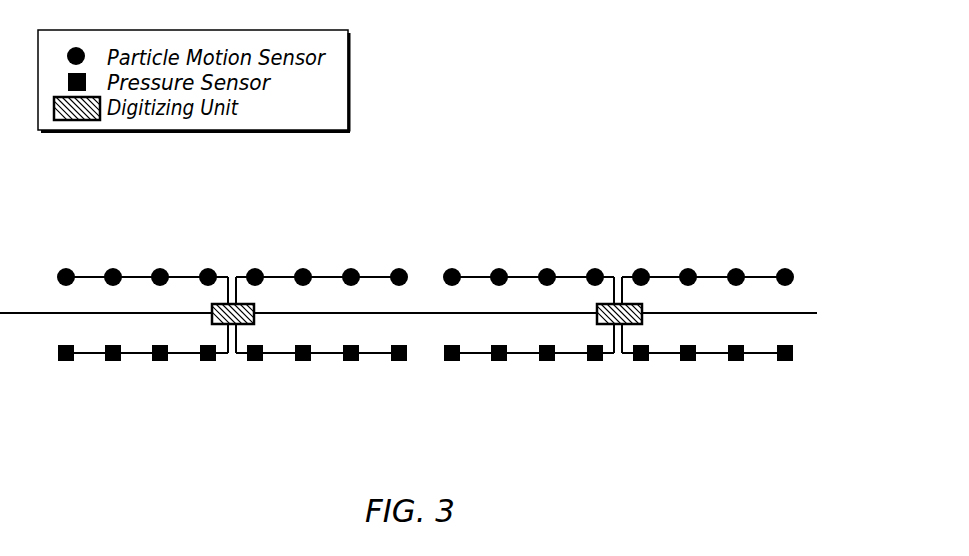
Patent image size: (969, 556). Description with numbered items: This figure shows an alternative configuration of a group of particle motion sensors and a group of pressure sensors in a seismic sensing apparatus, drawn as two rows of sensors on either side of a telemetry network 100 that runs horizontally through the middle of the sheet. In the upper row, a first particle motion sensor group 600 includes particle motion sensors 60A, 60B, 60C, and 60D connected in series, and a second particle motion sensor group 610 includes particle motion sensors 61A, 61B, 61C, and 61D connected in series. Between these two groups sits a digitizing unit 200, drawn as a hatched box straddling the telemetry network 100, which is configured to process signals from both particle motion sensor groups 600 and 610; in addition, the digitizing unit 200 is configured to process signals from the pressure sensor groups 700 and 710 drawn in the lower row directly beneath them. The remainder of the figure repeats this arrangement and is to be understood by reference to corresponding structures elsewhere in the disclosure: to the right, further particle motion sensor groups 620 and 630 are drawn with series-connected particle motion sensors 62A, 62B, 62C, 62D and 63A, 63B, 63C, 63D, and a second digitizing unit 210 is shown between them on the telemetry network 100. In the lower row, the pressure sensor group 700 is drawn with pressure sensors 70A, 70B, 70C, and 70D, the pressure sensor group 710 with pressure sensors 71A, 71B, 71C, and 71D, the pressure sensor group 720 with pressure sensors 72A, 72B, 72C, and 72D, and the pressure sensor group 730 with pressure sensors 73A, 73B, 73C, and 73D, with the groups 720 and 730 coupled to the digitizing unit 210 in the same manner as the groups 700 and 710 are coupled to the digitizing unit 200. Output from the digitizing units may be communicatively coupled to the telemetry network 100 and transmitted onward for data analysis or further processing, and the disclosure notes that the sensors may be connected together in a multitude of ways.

The telemetry network 100 is at (30, 311).
The digitizing unit 200 is at (248, 324).
The digitizing unit 210 is at (635, 324).
The particle motion sensor group 600 is at (131, 211).
The particle motion sensor group 610 is at (316, 209).
The particle motion sensor group 620 is at (504, 209).
The particle motion sensor group 630 is at (715, 209).
The pressure sensor group 700 is at (115, 433).
The pressure sensor group 710 is at (329, 432).
The pressure sensor group 720 is at (541, 432).
The pressure sensor group 730 is at (733, 428).
The particle motion sensor 60A is at (63, 268).
The particle motion sensor 60B is at (110, 268).
The particle motion sensor 60C is at (157, 268).
The particle motion sensor 60D is at (205, 268).
The particle motion sensor 61A is at (252, 268).
The particle motion sensor 61B is at (300, 268).
The particle motion sensor 61C is at (348, 268).
The particle motion sensor 61D is at (396, 268).
The particle motion sensor 62A is at (449, 268).
The particle motion sensor 62B is at (496, 268).
The particle motion sensor 62C is at (544, 268).
The particle motion sensor 62D is at (592, 268).
The particle motion sensor 63A is at (638, 268).
The particle motion sensor 63B is at (685, 268).
The particle motion sensor 63C is at (733, 268).
The particle motion sensor 63D is at (782, 268).
The pressure sensor 70A is at (67, 362).
The pressure sensor 70B is at (114, 362).
The pressure sensor 70C is at (161, 362).
The pressure sensor 70D is at (209, 362).
The pressure sensor 71A is at (256, 362).
The pressure sensor 71B is at (304, 362).
The pressure sensor 71C is at (352, 362).
The pressure sensor 71D is at (400, 362).
The pressure sensor 72A is at (453, 362).
The pressure sensor 72B is at (500, 362).
The pressure sensor 72C is at (548, 362).
The pressure sensor 72D is at (596, 362).
The pressure sensor 73A is at (642, 362).
The pressure sensor 73B is at (689, 362).
The pressure sensor 73C is at (737, 362).
The pressure sensor 73D is at (786, 362).